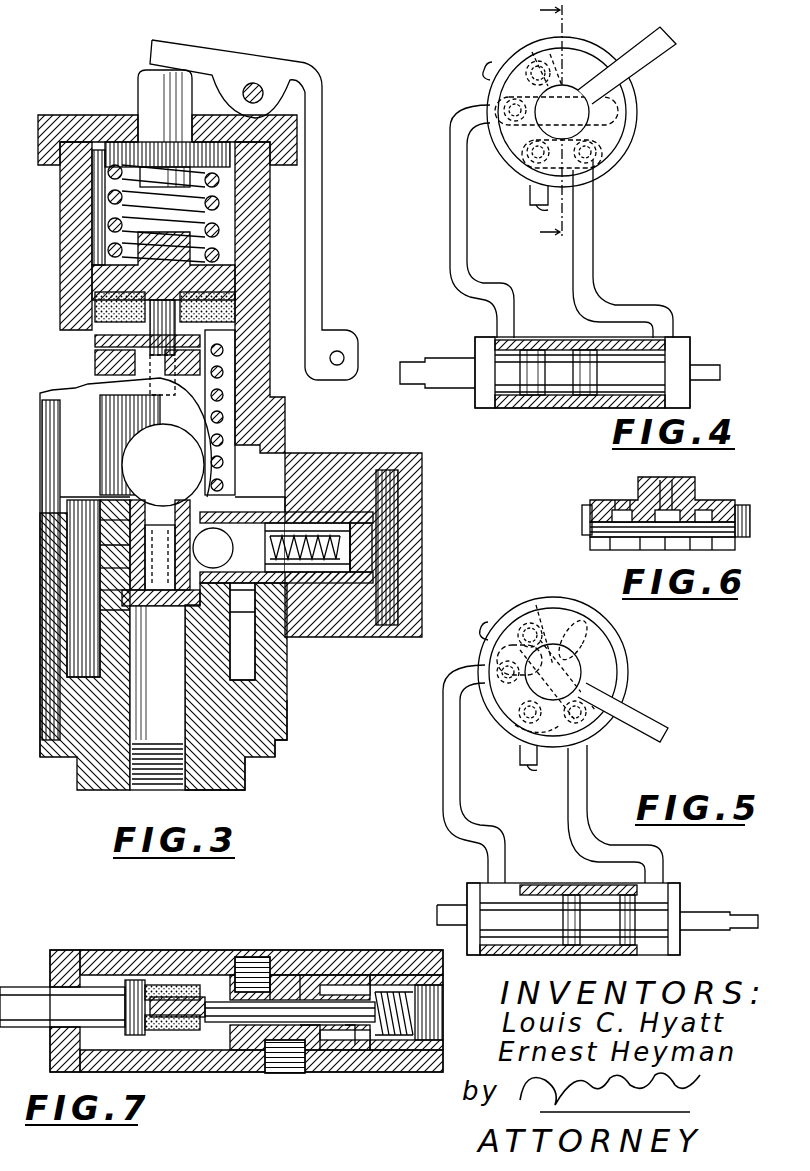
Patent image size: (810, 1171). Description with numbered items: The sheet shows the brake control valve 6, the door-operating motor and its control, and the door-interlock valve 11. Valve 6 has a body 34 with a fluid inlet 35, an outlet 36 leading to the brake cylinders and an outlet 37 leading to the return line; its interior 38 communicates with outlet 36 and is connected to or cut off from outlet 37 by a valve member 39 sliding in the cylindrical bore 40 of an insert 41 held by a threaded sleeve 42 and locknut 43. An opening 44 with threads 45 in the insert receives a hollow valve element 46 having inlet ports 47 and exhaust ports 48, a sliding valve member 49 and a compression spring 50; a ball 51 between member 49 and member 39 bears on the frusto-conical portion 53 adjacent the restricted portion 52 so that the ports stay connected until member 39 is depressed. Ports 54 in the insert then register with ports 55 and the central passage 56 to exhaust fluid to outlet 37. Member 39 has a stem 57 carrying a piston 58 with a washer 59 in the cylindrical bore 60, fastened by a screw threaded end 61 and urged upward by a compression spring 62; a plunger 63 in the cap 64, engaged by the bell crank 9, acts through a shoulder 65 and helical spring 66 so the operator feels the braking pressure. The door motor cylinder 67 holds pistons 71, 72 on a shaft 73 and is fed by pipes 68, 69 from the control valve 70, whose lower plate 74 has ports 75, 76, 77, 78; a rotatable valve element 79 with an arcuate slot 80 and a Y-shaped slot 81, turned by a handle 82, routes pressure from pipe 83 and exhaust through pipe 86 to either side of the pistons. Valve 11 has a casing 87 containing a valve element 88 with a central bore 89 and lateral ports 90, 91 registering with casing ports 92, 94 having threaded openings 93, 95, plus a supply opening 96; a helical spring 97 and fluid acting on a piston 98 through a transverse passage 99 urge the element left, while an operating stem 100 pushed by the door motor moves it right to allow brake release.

In FIG. 3, the valve 6 is at (95, 76).
In FIG. 4, the valve 6 is at (552, 124).
In FIG. 3, the bell crank 9 is at (321, 175).
In FIG. 7, the valve 11 is at (176, 940).
In FIG. 3, the body 34 is at (288, 420).
In FIG. 3, the fluid inlet 35 is at (424, 516).
In FIG. 3, the fluid outlet 36 is at (143, 450).
In FIG. 3, the fluid outlet 37 is at (168, 785).
In FIG. 3, the interior 38 is at (250, 465).
In FIG. 3, the valve member 39 is at (110, 568).
In FIG. 3, the cylindrical bore 40 is at (150, 640).
In FIG. 3, the insert 41 is at (247, 668).
In FIG. 3, the threaded sleeve 42 is at (245, 712).
In FIG. 3, the locknut 43 is at (247, 778).
In FIG. 3, the opening 44 is at (178, 532).
In FIG. 3, the threads 45 is at (236, 494).
In FIG. 3, the hollow valve element 46 is at (345, 543).
In FIG. 3, the inlet ports 47 is at (338, 522).
In FIG. 3, the exhaust ports 48 is at (266, 518).
In FIG. 3, the valve member 49 is at (372, 566).
In FIG. 3, the compression spring 50 is at (372, 552).
In FIG. 3, the ball 51 is at (198, 550).
In FIG. 3, the restricted portion 52 is at (105, 532).
In FIG. 3, the frusto-conical portion 53 is at (110, 550).
In FIG. 3, the ports 54 is at (110, 610).
In FIG. 3, the ports 55 is at (110, 590).
In FIG. 3, the central passage 56 is at (145, 607).
In FIG. 3, the stem 57 is at (200, 387).
In FIG. 3, the piston 58 is at (235, 290).
In FIG. 3, the washer 59 is at (235, 320).
In FIG. 3, the cylindrical bore 60 is at (235, 240).
In FIG. 3, the screw threaded end 61 is at (120, 388).
In FIG. 3, the compression spring 62 is at (228, 410).
In FIG. 3, the plunger 63 is at (140, 97).
In FIG. 3, the cap 64 is at (68, 115).
In FIG. 3, the shoulder 65 is at (155, 152).
In FIG. 3, the helical spring 66 is at (108, 226).
In FIG. 4, the cylinder 67 is at (580, 340).
In FIG. 5, the cylinder 67 is at (568, 885).
In FIG. 4, the pipe 68 is at (585, 252).
In FIG. 5, the pipe 68 is at (580, 783).
In FIG. 4, the pipe 69 is at (450, 250).
In FIG. 5, the pipe 69 is at (452, 740).
In FIG. 4, the control valve 70 is at (650, 100).
In FIG. 5, the control valve 70 is at (640, 660).
In FIG. 4, the piston 71 is at (533, 400).
In FIG. 5, the piston 71 is at (562, 948).
In FIG. 4, the piston 72 is at (578, 400).
In FIG. 5, the piston 72 is at (622, 948).
In FIG. 4, the shaft 73 is at (455, 365).
In FIG. 5, the shaft 73 is at (728, 915).
In FIG. 6, the lower plate 74 is at (742, 548).
In FIG. 4, the port 75 is at (530, 157).
In FIG. 5, the port 75 is at (520, 735).
In FIG. 4, the port 76 is at (592, 162).
In FIG. 5, the port 76 is at (590, 730).
In FIG. 4, the port 77 is at (500, 100).
In FIG. 5, the port 77 is at (500, 660).
In FIG. 4, the port 78 is at (530, 46).
In FIG. 5, the port 78 is at (533, 612).
In FIG. 4, the valve element 79 is at (585, 57).
In FIG. 6, the valve element 79 is at (700, 485).
In FIG. 5, the valve element 79 is at (553, 672).
In FIG. 4, the arcuate slot 80 is at (600, 140).
In FIG. 6, the arcuate slot 80 is at (626, 500).
In FIG. 5, the arcuate slot 80 is at (512, 710).
In FIG. 4, the Y-shaped slot 81 is at (565, 95).
In FIG. 6, the Y-shaped slot 81 is at (668, 505).
In FIG. 5, the Y-shaped slot 81 is at (598, 630).
In FIG. 4, the handle 82 is at (665, 44).
In FIG. 5, the handle 82 is at (668, 718).
In FIG. 4, the pipe 83 is at (530, 202).
In FIG. 5, the pipe 83 is at (520, 765).
In FIG. 4, the pipe 86 is at (488, 70).
In FIG. 5, the pipe 86 is at (490, 630).
In FIG. 7, the casing 87 is at (300, 962).
In FIG. 7, the valve element 88 is at (345, 990).
In FIG. 7, the central bore 89 is at (345, 1050).
In FIG. 7, the lateral port 90 is at (280, 1060).
In FIG. 7, the lateral port 91 is at (286, 965).
In FIG. 7, the port 92 is at (300, 1080).
In FIG. 7, the threaded opening 93 is at (292, 1075).
In FIG. 7, the port 94 is at (242, 960).
In FIG. 7, the threaded opening 95 is at (252, 958).
In FIG. 7, the threaded opening 96 is at (437, 1030).
In FIG. 7, the helical spring 97 is at (392, 1040).
In FIG. 7, the piston 98 is at (148, 975).
In FIG. 7, the transverse passage 99 is at (210, 1050).
In FIG. 7, the operating stem 100 is at (28, 995).